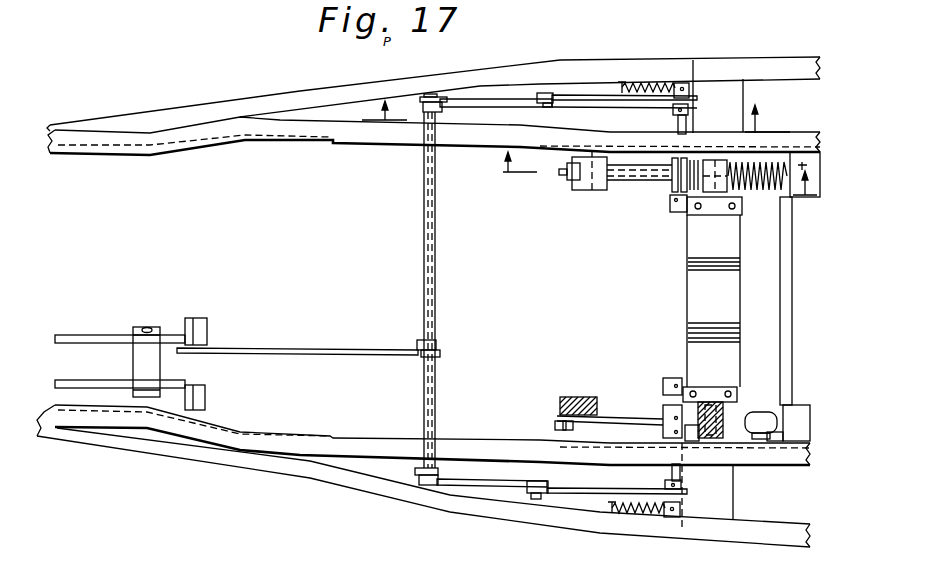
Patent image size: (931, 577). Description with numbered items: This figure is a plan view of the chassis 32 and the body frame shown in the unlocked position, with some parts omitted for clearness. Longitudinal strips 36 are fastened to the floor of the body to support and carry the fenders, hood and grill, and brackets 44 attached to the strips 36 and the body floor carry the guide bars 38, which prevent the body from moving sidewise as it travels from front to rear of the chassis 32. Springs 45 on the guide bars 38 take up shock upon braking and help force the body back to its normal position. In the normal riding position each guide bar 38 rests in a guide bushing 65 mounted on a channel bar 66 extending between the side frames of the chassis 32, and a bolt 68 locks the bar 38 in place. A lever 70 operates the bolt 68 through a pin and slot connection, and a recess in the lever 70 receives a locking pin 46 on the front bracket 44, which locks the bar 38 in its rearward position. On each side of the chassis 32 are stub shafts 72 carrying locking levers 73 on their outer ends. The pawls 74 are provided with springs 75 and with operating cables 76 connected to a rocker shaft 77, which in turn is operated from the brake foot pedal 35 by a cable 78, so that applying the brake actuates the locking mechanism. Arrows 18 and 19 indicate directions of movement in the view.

The chassis 32 is at (333, 90).
The longitudinal strips 36 is at (307, 136).
The operating cables 76 is at (480, 99).
The locking levers 73 is at (594, 95).
The pawls 74 is at (538, 95).
The springs 75 is at (656, 83).
The stub shafts 72 is at (677, 122).
The guide bushings 65 is at (715, 160).
The direction arrow 18 is at (597, 121).
The direction arrow 19 is at (663, 189).
The brackets 44 is at (587, 188).
The guide bars 38 is at (647, 177).
The springs 45 is at (767, 192).
The rocker shaft 77 is at (424, 207).
The channel bar 66 is at (706, 291).
The brake pedal 35 is at (200, 320).
The cable 78 is at (293, 348).
The bolt 68 is at (713, 401).
The locking pins 46 is at (560, 426).
The lever 70 is at (618, 418).